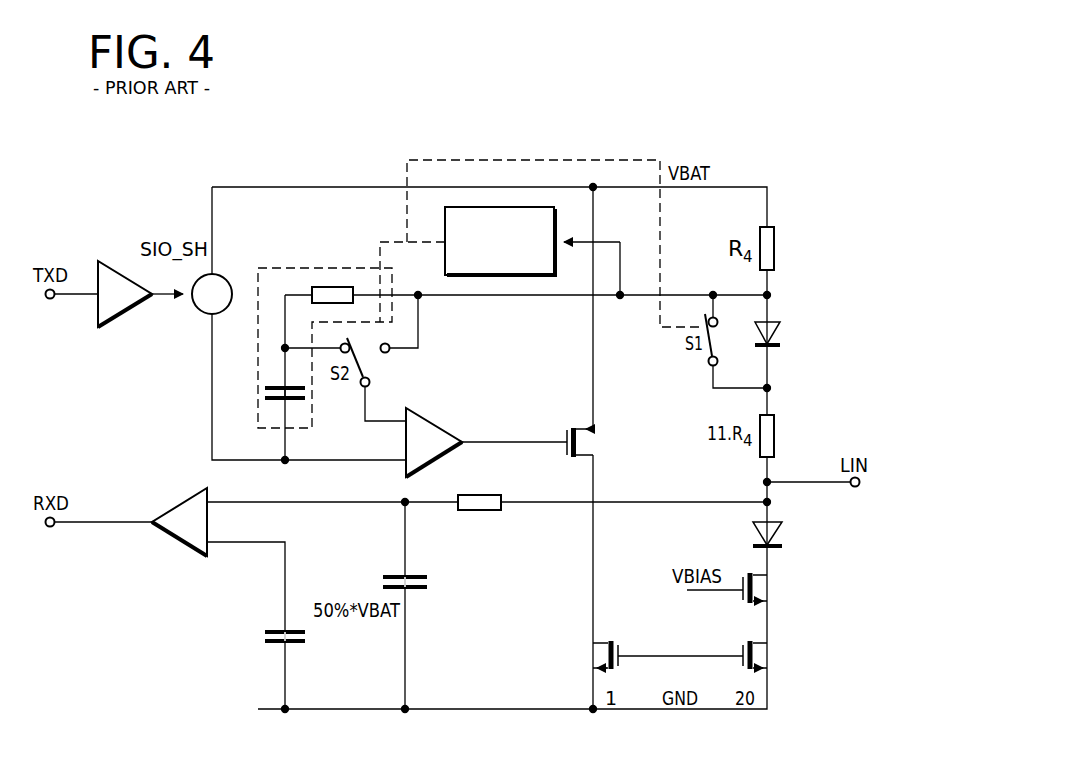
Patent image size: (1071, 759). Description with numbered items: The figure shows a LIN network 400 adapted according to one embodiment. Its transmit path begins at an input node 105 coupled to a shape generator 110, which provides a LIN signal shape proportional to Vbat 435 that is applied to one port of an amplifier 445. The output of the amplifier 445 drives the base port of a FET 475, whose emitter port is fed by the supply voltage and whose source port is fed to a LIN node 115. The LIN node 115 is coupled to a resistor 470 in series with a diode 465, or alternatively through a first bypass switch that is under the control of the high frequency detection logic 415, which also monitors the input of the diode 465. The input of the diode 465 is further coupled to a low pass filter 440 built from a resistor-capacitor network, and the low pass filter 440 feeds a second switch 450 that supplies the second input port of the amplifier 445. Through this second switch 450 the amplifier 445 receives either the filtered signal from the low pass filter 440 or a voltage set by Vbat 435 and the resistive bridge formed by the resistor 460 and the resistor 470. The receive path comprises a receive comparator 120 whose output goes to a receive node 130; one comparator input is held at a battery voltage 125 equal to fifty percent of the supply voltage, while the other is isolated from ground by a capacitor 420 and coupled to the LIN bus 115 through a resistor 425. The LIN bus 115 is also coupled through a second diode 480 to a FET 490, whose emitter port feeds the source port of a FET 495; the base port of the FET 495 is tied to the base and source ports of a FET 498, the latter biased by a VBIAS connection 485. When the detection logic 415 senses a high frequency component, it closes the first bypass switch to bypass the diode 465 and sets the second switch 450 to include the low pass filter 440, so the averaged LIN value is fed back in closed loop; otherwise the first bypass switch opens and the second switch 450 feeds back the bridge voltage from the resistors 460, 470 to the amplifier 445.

The input node 105 is at (50, 299).
The shape generator 110 is at (128, 309).
The LIN node 115 is at (855, 488).
The receive comparator 120 is at (181, 502).
The battery voltage 125 is at (270, 628).
The receive node 130 is at (50, 527).
The LIN network 400 is at (744, 130).
The high frequency detection logic 415 is at (497, 277).
The capacitor 420 is at (395, 575).
The resistor 425 is at (480, 512).
The Vbat 435 is at (565, 186).
The low pass filter 440 is at (258, 365).
The amplifier 445 is at (444, 430).
The second switch 450 is at (370, 357).
The resistor 460 is at (777, 238).
The diode 465 is at (781, 330).
The resistor 470 is at (777, 427).
The FET 475 is at (583, 437).
The second diode 480 is at (782, 530).
The VBIAS bias input 485 is at (703, 592).
The FET 490 is at (760, 587).
The FET 495 is at (760, 655).
The FET 498 is at (600, 656).